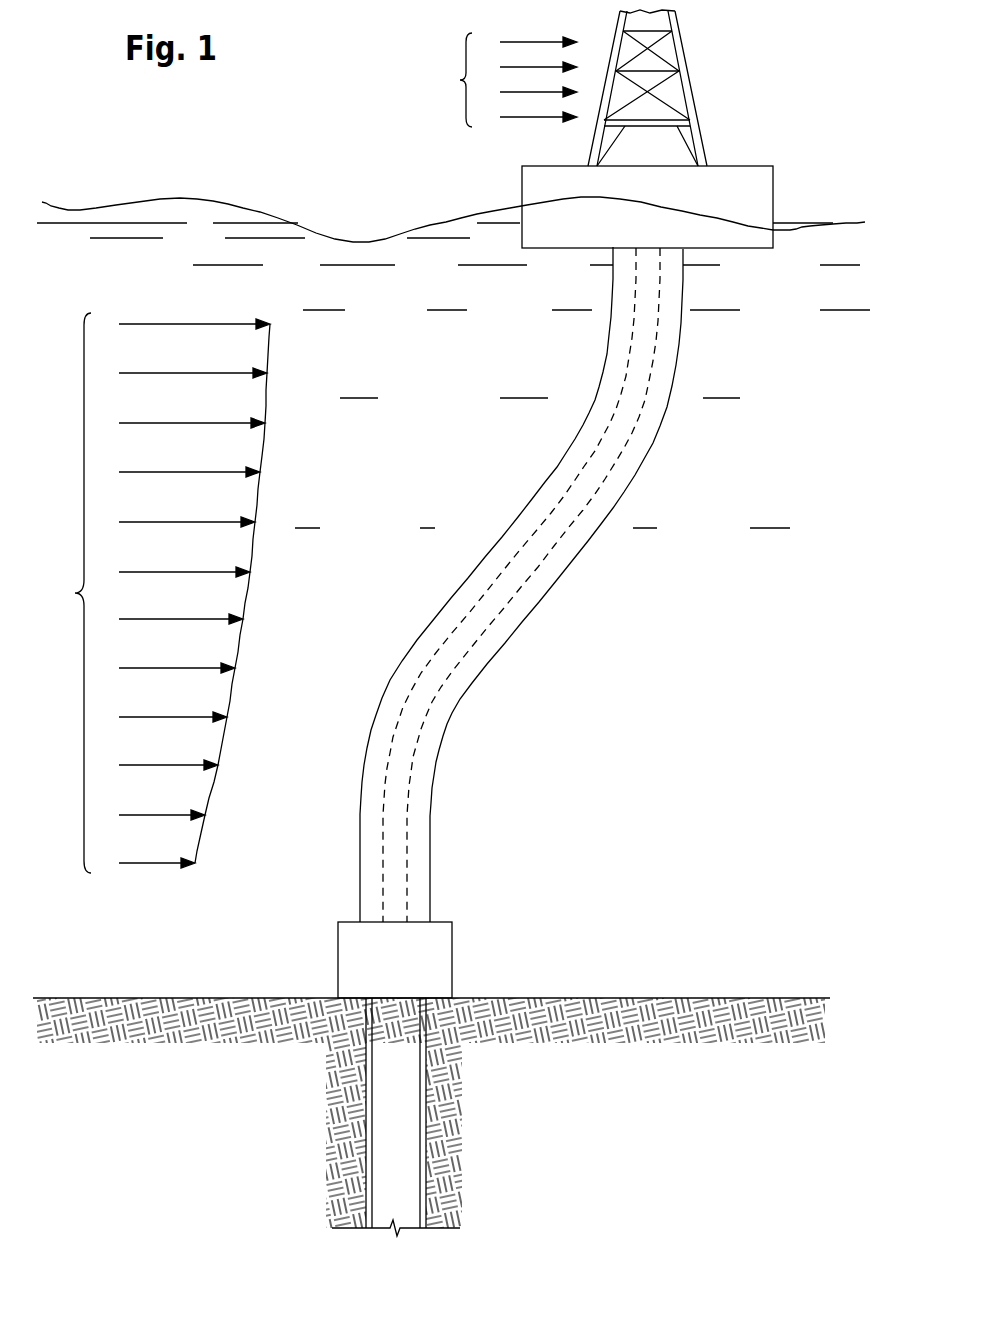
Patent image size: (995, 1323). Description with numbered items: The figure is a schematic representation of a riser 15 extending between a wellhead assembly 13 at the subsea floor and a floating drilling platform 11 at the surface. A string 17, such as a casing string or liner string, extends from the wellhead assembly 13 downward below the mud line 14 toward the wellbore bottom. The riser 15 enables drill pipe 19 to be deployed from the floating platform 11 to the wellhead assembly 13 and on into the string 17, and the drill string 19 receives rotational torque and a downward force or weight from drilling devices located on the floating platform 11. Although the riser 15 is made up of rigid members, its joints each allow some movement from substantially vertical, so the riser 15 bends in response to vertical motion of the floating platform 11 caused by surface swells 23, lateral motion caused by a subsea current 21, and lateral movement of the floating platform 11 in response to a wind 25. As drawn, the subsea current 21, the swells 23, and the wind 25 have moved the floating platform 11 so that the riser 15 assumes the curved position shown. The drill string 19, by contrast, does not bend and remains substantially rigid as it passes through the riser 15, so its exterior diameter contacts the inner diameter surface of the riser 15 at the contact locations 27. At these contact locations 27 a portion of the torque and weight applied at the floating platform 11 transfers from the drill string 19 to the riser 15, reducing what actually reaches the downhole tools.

The floating drilling platform 11 is at (757, 166).
The wellhead assembly 13 is at (455, 942).
The mud line 14 is at (172, 996).
The riser 15 is at (587, 553).
The string 17 is at (427, 1100).
The drill pipe 19 is at (490, 598).
The subsea current 21 is at (159, 593).
The surface swells 23 is at (258, 196).
The wind 25 is at (500, 80).
The contact locations 27 is at (570, 457).